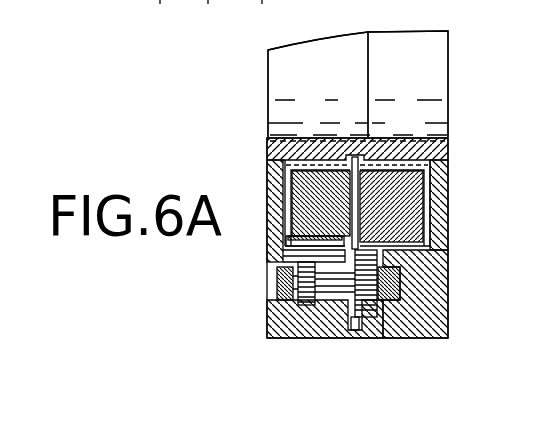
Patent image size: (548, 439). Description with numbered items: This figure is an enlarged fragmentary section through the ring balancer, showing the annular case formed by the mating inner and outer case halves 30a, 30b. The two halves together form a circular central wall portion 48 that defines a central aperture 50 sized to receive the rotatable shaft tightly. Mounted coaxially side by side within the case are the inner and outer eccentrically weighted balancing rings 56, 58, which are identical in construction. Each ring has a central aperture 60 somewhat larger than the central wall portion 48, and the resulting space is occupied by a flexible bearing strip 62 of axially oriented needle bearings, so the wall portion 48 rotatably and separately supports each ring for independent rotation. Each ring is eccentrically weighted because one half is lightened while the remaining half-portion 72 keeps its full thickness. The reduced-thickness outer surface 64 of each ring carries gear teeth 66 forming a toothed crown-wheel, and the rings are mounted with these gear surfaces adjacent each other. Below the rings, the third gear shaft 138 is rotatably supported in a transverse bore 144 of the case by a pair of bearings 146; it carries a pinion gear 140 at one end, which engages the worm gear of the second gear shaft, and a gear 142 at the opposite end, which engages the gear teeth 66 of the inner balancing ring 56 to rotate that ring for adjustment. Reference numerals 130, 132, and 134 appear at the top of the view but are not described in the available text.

The inner case half 30a is at (411, 48).
The outer case half 30b is at (325, 50).
The central wall portion 48 is at (313, 137).
The central aperture 50 is at (437, 76).
The inner balancing ring 56 is at (444, 224).
The outer balancing ring 58 is at (284, 196).
The central aperture 60 is at (278, 151).
The flexible bearing strips 62 is at (290, 138).
The outer surface 64 is at (288, 241).
The gear teeth 66 is at (278, 266).
The remaining half-portion 72 is at (295, 178).
The conduit 130 is at (263, 15).
The conduit 132 is at (208, 15).
The conduit 134 is at (160, 15).
The third gear shaft 138 is at (332, 318).
The pinion gear 140 is at (299, 337).
The gear 142 is at (398, 320).
The transverse bore 144 is at (347, 320).
The bearings 146 is at (268, 305).